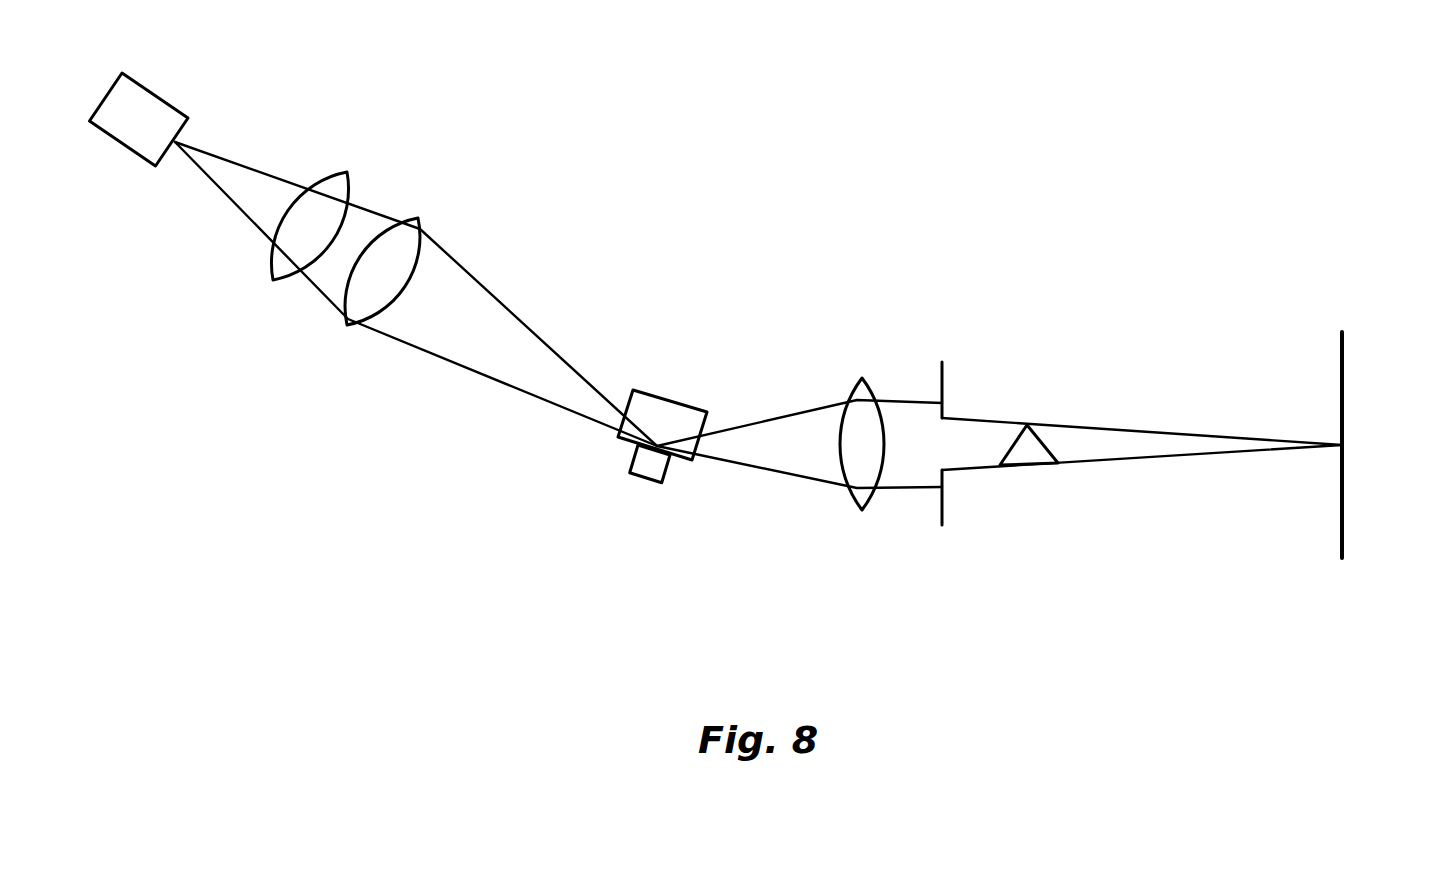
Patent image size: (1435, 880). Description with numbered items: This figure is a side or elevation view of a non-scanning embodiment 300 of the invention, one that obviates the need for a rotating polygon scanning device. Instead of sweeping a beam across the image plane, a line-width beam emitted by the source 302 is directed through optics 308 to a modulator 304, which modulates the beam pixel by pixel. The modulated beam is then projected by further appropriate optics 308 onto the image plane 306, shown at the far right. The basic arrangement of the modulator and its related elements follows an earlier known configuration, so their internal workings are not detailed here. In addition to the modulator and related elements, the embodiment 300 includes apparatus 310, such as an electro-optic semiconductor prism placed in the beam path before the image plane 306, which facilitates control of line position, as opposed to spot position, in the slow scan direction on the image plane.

The embodiment 300 is at (864, 179).
The source 302 is at (158, 97).
The modulator 304 is at (670, 402).
The image plane 306 is at (1345, 367).
The optics 308 is at (342, 363).
The apparatus 310 is at (1030, 465).